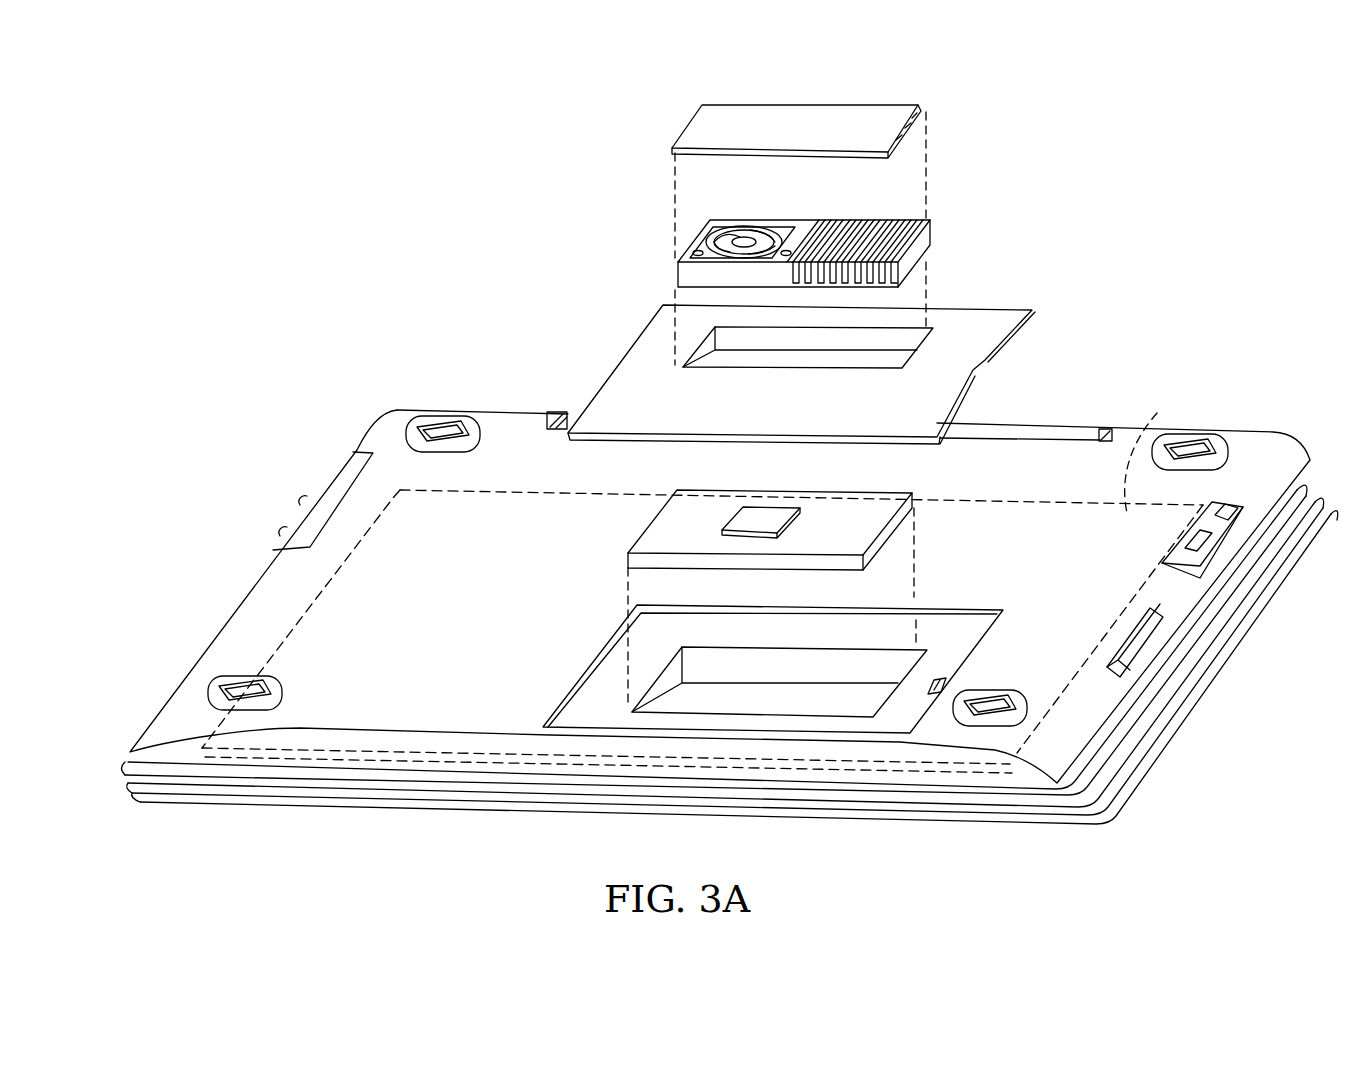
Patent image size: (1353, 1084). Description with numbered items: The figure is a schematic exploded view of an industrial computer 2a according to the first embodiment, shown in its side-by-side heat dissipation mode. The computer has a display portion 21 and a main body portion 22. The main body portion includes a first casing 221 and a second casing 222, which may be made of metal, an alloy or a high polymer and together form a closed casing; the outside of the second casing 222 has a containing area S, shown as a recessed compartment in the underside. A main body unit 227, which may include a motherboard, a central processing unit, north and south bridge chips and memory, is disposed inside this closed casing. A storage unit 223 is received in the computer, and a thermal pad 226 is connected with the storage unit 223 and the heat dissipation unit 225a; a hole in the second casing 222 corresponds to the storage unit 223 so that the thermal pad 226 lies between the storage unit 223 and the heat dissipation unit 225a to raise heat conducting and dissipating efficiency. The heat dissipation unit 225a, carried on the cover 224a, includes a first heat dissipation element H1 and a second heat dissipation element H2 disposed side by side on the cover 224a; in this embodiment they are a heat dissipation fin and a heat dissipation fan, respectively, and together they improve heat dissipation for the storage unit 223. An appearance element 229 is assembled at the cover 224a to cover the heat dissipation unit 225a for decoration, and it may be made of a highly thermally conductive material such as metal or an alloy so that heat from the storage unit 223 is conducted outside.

The industrial computer 2a is at (320, 200).
The display portion 21 is at (141, 810).
The main body portion 22 is at (126, 752).
The first casing 221 is at (1070, 783).
The second casing 222 is at (1098, 726).
The storage unit 223 is at (657, 533).
The cover 224a is at (985, 310).
The heat dissipation unit 225a is at (845, 197).
The thermal pad 226 is at (747, 510).
The main body unit 227 is at (1149, 423).
The appearance element 229 is at (695, 131).
The first heat dissipation element H1 is at (880, 222).
The second heat dissipation element H2 is at (763, 223).
The containing area S is at (840, 660).